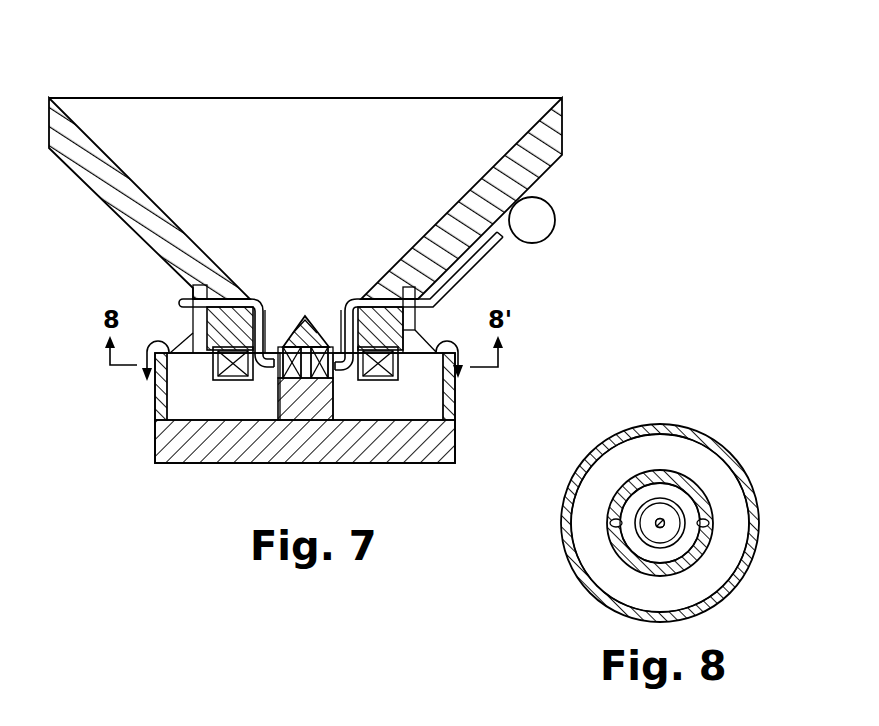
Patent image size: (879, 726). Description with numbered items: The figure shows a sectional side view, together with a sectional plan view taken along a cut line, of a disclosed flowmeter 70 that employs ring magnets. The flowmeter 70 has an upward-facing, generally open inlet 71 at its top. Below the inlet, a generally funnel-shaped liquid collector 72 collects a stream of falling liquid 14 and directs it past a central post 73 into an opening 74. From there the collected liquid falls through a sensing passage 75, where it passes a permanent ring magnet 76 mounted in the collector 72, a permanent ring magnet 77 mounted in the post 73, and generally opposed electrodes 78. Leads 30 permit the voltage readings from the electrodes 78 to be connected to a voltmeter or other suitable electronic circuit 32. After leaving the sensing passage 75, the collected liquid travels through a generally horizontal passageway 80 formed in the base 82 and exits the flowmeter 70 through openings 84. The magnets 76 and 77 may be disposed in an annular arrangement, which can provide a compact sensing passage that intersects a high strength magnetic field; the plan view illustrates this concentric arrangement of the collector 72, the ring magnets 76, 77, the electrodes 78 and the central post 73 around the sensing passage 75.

In FIG. 7, the flowmeter 70 is at (266, 56).
In FIG. 7, the stream of falling liquid 14 is at (306, 276).
In FIG. 7, the inlet 71 is at (530, 98).
In FIG. 7, the electronic circuit 32 is at (556, 222).
In FIG. 7, the leads 30 is at (487, 262).
In FIG. 7, the openings 84 is at (186, 318).
In FIG. 7, the liquid collector 72 is at (383, 329).
In FIG. 8, the liquid collector 72 is at (592, 460).
In FIG. 7, the central post 73 is at (320, 322).
In FIG. 8, the central post 73 is at (680, 540).
In FIG. 7, the opening 74 is at (338, 322).
In FIG. 7, the sensing passage 75 is at (275, 372).
In FIG. 8, the sensing passage 75 is at (637, 543).
In FIG. 7, the permanent ring magnet 76 is at (212, 363).
In FIG. 8, the permanent ring magnet 76 is at (583, 553).
In FIG. 7, the permanent ring magnet 77 is at (290, 348).
In FIG. 8, the permanent ring magnet 77 is at (667, 510).
In FIG. 7, the electrodes 78 is at (260, 373).
In FIG. 8, the electrodes 78 is at (630, 483).
In FIG. 7, the passageway 80 is at (455, 447).
In FIG. 7, the base 82 is at (310, 455).